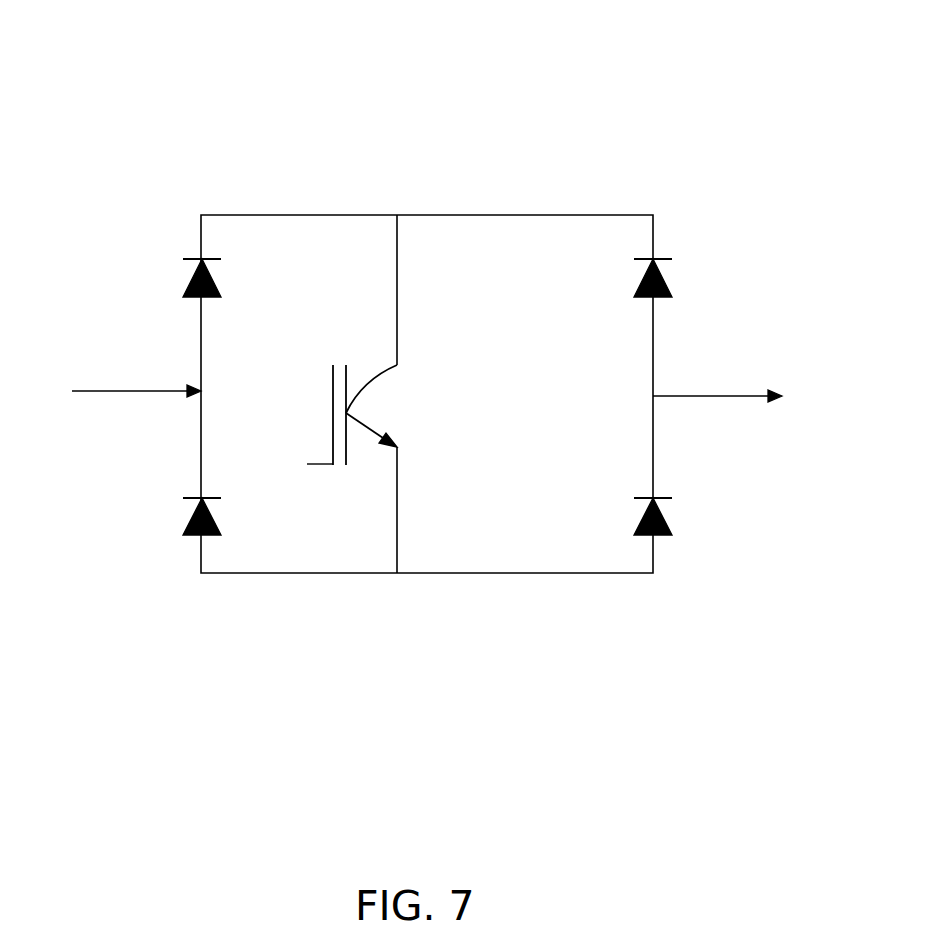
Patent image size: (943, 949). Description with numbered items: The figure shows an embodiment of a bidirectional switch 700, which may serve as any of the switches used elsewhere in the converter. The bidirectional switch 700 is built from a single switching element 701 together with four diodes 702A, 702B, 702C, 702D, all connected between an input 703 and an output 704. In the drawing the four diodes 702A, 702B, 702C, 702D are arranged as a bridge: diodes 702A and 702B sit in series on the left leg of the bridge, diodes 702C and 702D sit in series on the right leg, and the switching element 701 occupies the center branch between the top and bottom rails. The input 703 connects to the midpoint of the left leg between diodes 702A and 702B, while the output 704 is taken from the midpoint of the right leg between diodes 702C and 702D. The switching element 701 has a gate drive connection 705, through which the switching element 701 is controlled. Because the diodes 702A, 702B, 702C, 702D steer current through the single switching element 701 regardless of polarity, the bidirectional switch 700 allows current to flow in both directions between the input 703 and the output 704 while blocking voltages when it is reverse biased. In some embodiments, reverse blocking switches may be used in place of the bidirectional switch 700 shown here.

The bidirectional switch 700 is at (110, 36).
The switching element 701 is at (383, 408).
The diode 702A is at (183, 268).
The diode 702B is at (190, 511).
The diode 702C is at (637, 269).
The diode 702D is at (640, 511).
The input 703 is at (68, 400).
The output 704 is at (816, 406).
The gate drive connection 705 is at (306, 472).